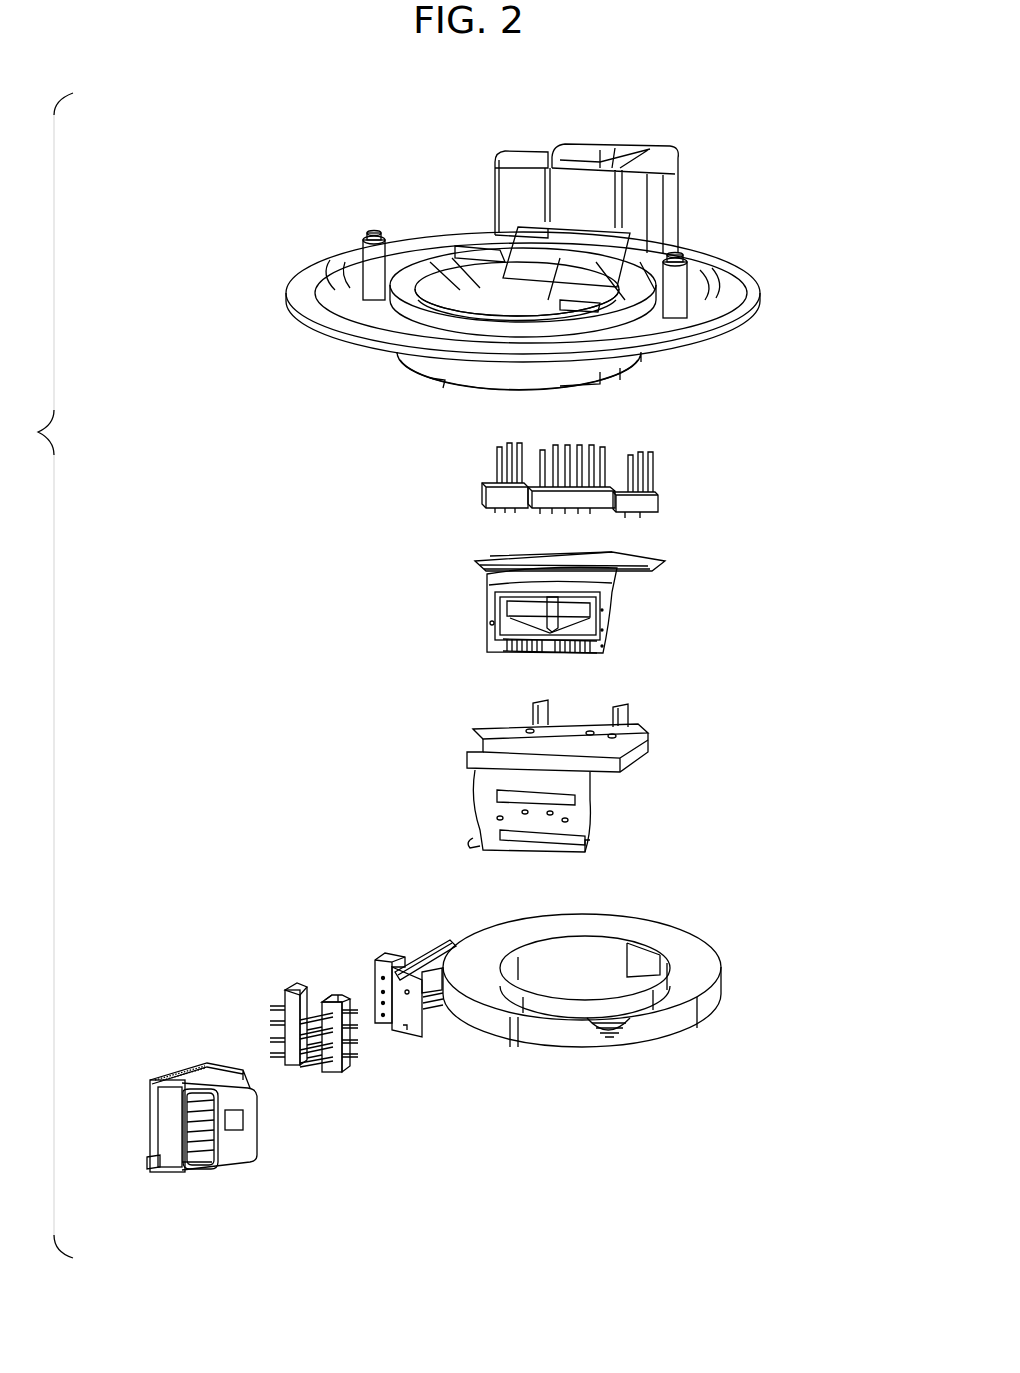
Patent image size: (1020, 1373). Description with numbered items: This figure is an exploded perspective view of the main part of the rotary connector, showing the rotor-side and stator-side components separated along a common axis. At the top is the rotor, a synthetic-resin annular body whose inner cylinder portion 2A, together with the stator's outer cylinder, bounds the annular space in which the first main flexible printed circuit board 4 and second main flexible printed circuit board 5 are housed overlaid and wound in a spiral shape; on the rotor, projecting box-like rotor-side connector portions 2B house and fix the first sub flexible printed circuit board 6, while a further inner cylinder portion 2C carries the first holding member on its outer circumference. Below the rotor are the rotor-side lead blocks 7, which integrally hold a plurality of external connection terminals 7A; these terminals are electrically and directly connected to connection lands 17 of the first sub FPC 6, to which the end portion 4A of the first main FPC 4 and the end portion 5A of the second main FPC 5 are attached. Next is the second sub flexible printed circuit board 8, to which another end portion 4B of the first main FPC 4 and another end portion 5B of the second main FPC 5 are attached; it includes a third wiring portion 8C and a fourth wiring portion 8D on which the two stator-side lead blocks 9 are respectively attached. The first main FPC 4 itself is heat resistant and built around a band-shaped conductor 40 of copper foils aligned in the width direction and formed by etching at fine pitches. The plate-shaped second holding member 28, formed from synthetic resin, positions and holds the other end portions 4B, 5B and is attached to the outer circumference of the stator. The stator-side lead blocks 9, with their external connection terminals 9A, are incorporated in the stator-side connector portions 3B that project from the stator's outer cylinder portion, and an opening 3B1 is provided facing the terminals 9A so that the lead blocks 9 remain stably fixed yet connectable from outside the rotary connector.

The inner cylinder portion 2A is at (737, 278).
The rotor-side connector portions 2B is at (532, 157).
The inner cylinder portion 2C is at (405, 370).
The rotor-side lead blocks 7 is at (589, 465).
The external connection terminals 7A is at (497, 457).
The connection lands 17 is at (528, 557).
The first sub flexible printed circuit board 6 is at (600, 588).
The second sub flexible printed circuit board 8 is at (583, 787).
The first main flexible printed circuit board 4 is at (641, 993).
The second main flexible printed circuit board 5 is at (641, 993).
The end portion 4A is at (733, 955).
The end portion 5A is at (648, 965).
The band-shaped conductor 40 is at (617, 1027).
The third wiring portion 8C is at (377, 970).
The fourth wiring portion 8D is at (413, 1030).
The second holding member 28 is at (450, 943).
The another end portion 4B is at (365, 960).
The another end portion 5B is at (437, 970).
The stator-side lead blocks 9 is at (312, 1031).
The external connection terminals 9A is at (272, 1010).
The stator-side connector portions 3B is at (173, 1110).
The opening 3B1 is at (190, 1073).